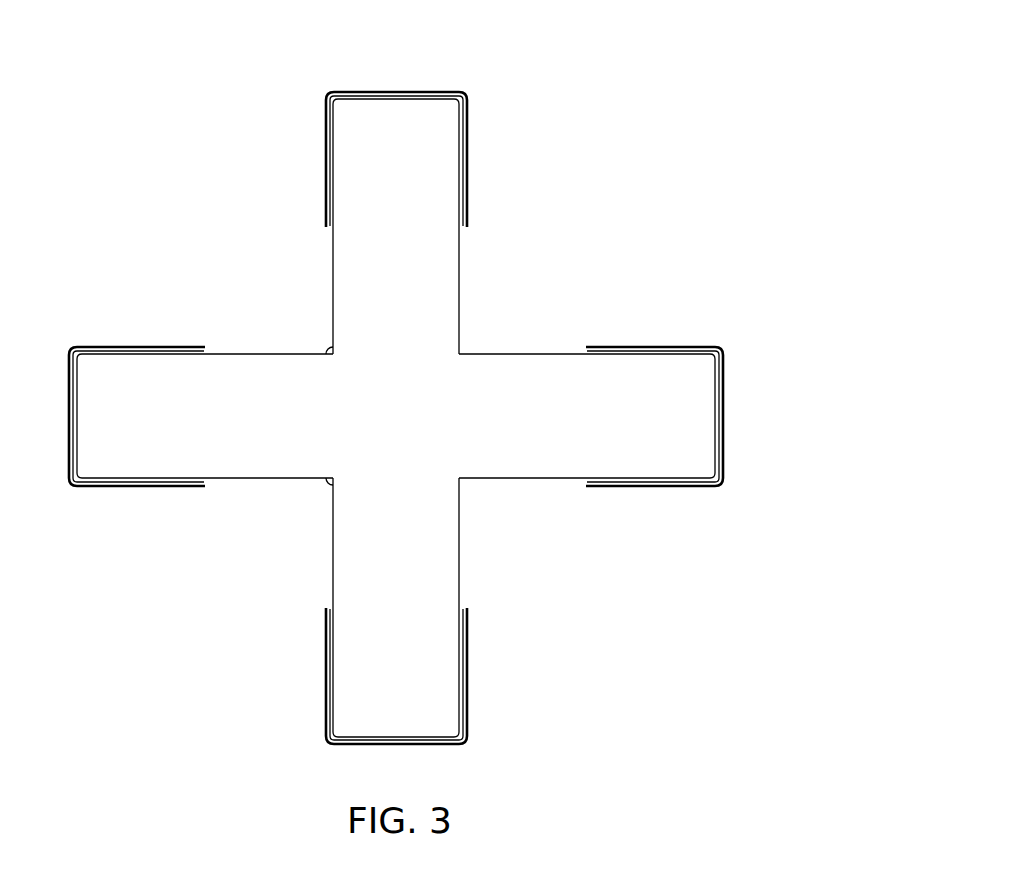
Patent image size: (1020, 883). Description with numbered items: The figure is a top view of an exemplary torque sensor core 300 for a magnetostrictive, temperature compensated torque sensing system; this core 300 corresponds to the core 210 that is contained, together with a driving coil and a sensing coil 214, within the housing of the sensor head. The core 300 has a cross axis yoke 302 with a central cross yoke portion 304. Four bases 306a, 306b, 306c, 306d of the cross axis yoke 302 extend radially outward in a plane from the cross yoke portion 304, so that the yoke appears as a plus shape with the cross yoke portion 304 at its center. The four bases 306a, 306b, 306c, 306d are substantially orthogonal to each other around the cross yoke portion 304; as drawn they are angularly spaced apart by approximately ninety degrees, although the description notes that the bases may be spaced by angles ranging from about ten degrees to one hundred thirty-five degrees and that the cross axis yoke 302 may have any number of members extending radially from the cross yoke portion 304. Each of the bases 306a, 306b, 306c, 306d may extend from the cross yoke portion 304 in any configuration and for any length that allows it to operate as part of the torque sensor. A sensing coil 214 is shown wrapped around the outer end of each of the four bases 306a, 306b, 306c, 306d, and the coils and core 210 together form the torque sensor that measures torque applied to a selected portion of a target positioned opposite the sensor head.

The core 300 is at (562, 74).
The cross axis yoke 302 is at (381, 457).
The cross yoke portion 304 is at (369, 425).
The base 306a is at (347, 266).
The base 306b is at (246, 472).
The base 306c is at (448, 585).
The base 306d is at (540, 470).
The sensing coil 214 is at (326, 157).
The core 210 is at (305, 329).